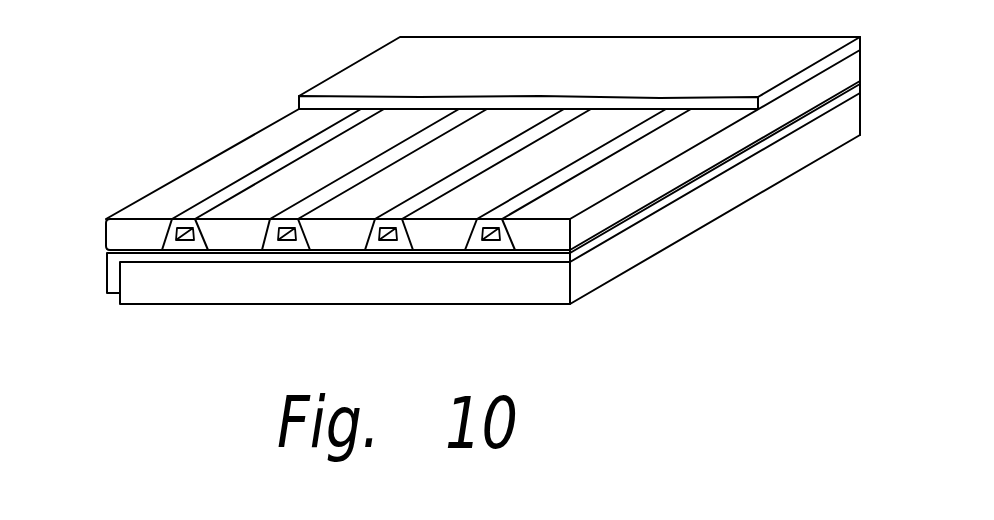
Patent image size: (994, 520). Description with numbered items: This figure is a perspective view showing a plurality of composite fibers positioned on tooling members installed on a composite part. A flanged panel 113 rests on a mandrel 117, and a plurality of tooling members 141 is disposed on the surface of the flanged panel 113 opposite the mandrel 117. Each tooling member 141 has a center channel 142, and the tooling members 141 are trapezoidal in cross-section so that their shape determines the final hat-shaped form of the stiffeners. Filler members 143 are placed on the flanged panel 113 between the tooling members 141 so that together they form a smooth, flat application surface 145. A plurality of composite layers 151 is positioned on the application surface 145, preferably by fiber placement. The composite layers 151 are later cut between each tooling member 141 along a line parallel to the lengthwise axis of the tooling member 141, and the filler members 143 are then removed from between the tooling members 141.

The flanged panel 113 is at (107, 280).
The mandrel 117 is at (172, 306).
The tooling members 141 is at (187, 213).
The center channel 142 is at (185, 240).
The filler members 143 is at (221, 151).
The application surface 145 is at (298, 127).
The composite layers 151 is at (383, 47).